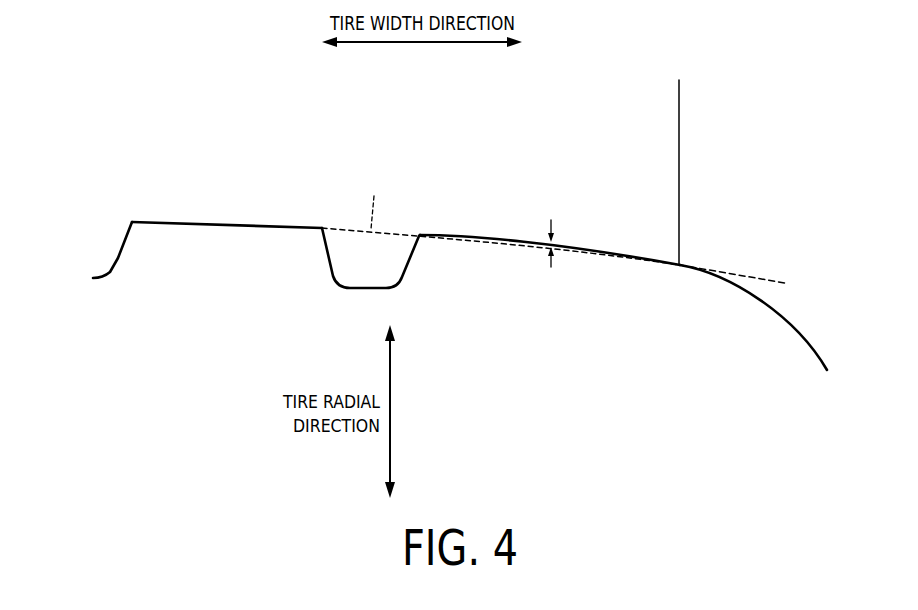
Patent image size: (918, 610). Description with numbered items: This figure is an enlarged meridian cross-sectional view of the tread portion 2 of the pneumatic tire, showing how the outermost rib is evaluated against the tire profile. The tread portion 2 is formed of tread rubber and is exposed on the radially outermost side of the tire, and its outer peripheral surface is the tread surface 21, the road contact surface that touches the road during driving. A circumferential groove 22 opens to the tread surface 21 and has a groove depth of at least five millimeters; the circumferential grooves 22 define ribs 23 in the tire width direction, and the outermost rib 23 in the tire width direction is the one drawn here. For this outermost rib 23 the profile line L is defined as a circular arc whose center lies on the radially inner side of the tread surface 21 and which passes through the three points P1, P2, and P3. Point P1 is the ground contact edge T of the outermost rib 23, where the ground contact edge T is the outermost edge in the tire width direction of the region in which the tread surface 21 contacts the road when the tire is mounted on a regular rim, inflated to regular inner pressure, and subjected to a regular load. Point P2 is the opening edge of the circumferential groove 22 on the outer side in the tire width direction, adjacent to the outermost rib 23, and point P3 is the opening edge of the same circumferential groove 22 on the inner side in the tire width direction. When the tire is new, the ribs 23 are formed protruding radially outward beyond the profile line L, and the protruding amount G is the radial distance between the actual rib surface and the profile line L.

The tread portion 2 is at (133, 219).
The tread surface 21 is at (156, 217).
The circumferential groove 22 is at (333, 246).
The rib 23 is at (203, 240).
The ground contact edge point P1 is at (679, 263).
The outer opening edge of circumferential groove P2 is at (425, 235).
The inner opening edge of circumferential groove P3 is at (322, 226).
The profile line L is at (375, 201).
The protruding amount G is at (560, 242).
The ground contact edge T is at (682, 264).